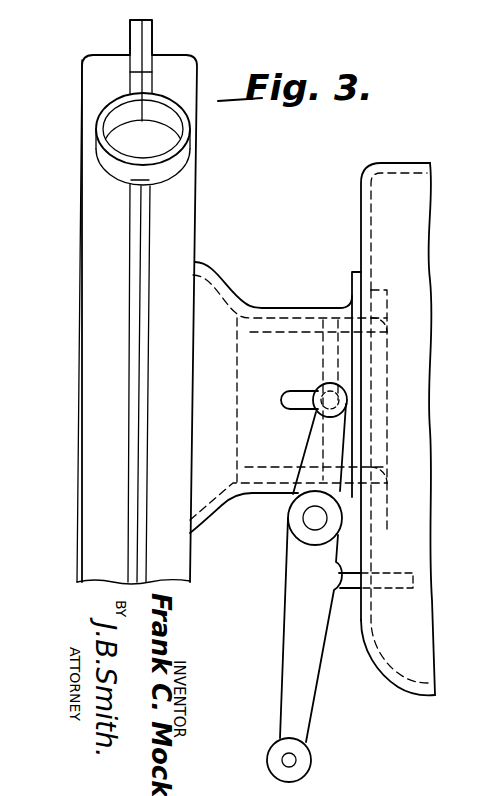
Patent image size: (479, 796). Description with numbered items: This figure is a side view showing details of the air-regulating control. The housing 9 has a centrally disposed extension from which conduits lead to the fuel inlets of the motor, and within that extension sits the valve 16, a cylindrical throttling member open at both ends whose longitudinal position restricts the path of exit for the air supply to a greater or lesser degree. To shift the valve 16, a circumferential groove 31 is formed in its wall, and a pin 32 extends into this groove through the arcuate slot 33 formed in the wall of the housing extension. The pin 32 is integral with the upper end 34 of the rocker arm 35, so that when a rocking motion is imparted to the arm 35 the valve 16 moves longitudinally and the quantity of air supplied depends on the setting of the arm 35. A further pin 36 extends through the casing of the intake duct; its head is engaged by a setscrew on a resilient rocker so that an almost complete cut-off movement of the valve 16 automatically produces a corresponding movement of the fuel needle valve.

The housing 9 is at (182, 196).
The valve 16 is at (257, 320).
The circumferential groove 31 is at (325, 318).
The pin 32 is at (313, 425).
The arcuate slot 33 is at (286, 397).
The upper end of rocker arm 34 is at (343, 412).
The rocker arm 35 is at (289, 583).
The pin 36 is at (413, 588).